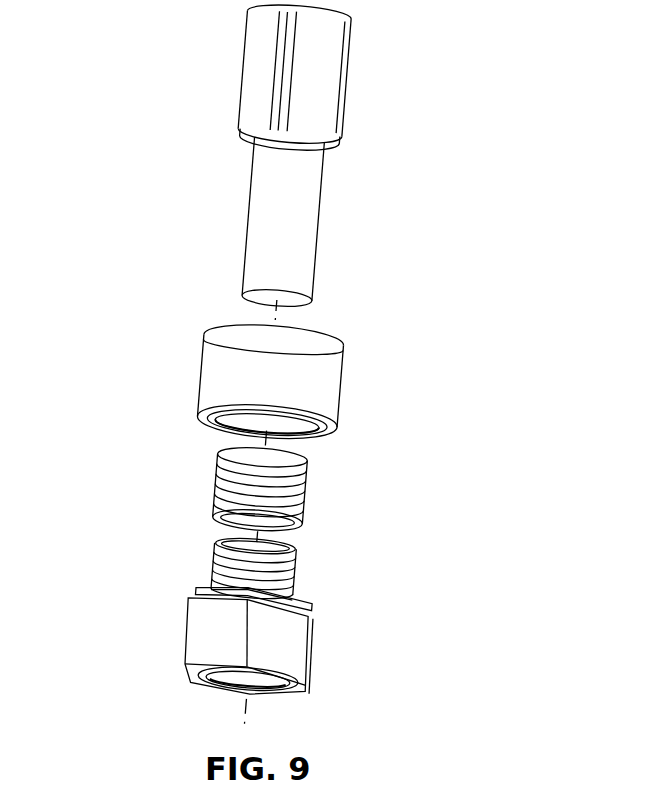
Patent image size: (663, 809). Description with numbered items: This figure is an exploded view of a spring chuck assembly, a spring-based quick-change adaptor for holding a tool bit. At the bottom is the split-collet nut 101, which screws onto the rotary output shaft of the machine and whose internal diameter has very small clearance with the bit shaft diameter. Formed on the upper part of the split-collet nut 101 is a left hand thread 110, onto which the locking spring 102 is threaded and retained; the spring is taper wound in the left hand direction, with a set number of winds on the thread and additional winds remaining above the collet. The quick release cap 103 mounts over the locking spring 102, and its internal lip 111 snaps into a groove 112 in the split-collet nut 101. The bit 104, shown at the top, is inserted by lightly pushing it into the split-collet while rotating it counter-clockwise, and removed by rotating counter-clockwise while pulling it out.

The split-collet nut 101 is at (322, 635).
The locking spring 102 is at (312, 467).
The quick release cap 103 is at (198, 352).
The bit 104 is at (235, 92).
The left hand thread 110 is at (303, 558).
The internal lip 111 is at (200, 418).
The groove 112 is at (187, 592).